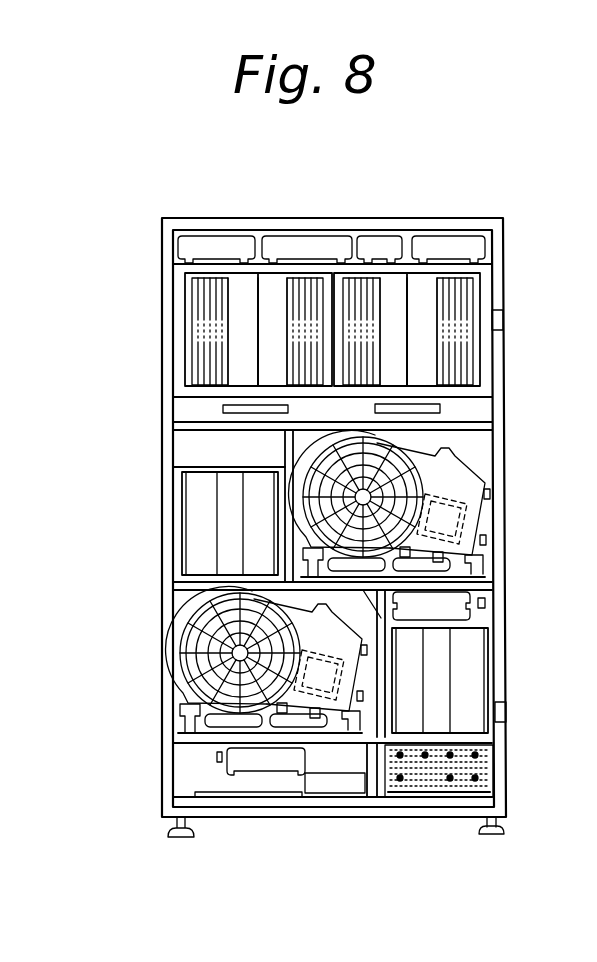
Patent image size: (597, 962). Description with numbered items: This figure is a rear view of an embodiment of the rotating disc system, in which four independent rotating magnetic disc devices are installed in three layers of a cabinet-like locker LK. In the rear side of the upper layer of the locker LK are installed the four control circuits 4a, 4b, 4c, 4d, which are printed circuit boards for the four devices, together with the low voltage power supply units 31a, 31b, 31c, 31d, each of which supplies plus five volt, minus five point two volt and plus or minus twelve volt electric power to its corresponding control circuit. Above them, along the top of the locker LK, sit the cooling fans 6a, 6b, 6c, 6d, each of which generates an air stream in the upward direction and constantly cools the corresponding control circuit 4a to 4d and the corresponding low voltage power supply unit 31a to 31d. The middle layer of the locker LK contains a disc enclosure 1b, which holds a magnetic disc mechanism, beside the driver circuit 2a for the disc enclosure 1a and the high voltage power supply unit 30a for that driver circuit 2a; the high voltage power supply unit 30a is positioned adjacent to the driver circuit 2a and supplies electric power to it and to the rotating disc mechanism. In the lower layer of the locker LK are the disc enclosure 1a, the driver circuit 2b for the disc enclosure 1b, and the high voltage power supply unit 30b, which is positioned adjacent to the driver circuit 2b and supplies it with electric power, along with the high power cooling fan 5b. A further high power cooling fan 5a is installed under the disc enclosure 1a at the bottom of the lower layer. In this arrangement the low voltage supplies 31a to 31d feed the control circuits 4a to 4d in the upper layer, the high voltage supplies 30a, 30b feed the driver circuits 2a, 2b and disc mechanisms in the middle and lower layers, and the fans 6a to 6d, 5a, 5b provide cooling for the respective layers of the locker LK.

The locker LK is at (582, 254).
The disc enclosure 1a is at (192, 660).
The disc enclosure 1b is at (470, 500).
The driver circuit 2a is at (203, 553).
The driver circuit 2b is at (413, 652).
The control circuit 4a is at (200, 288).
The control circuit 4b is at (298, 290).
The control circuit 4c is at (352, 282).
The control circuit 4d is at (467, 282).
The high power cooling fan 5a is at (238, 762).
The high power cooling fan 5b is at (452, 600).
The cooling fan 6a is at (202, 242).
The cooling fan 6b is at (317, 250).
The cooling fan 6c is at (377, 248).
The cooling fan 6d is at (448, 242).
The high voltage power supply unit 30a is at (255, 505).
The high voltage power supply unit 30b is at (472, 695).
The low voltage power supply unit 31a is at (242, 328).
The low voltage power supply unit 31b is at (268, 293).
The low voltage power supply unit 31c is at (395, 280).
The low voltage power supply unit 31d is at (425, 282).